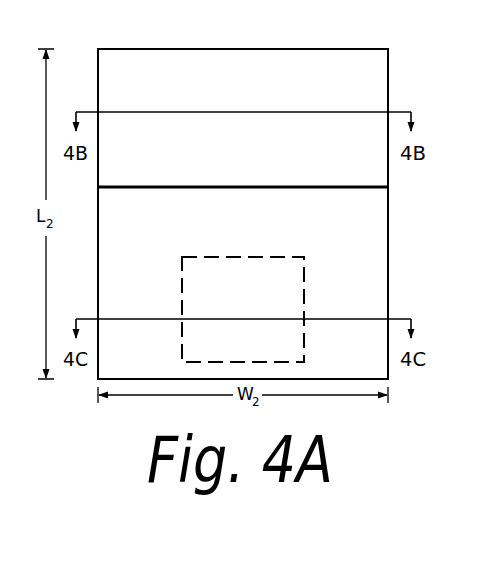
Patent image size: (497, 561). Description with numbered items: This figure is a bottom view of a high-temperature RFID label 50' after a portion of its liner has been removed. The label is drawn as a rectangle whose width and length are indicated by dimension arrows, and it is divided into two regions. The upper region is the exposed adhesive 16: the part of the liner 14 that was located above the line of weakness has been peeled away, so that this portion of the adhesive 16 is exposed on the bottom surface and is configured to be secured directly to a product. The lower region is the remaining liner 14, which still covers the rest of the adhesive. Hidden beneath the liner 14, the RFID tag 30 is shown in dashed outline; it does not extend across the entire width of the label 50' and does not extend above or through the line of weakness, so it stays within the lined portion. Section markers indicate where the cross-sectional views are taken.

The adhesive 16 is at (253, 90).
The liner 14 is at (253, 236).
The RFID tag 30 is at (181, 278).
The high-temperature RFID label 50' is at (222, 268).